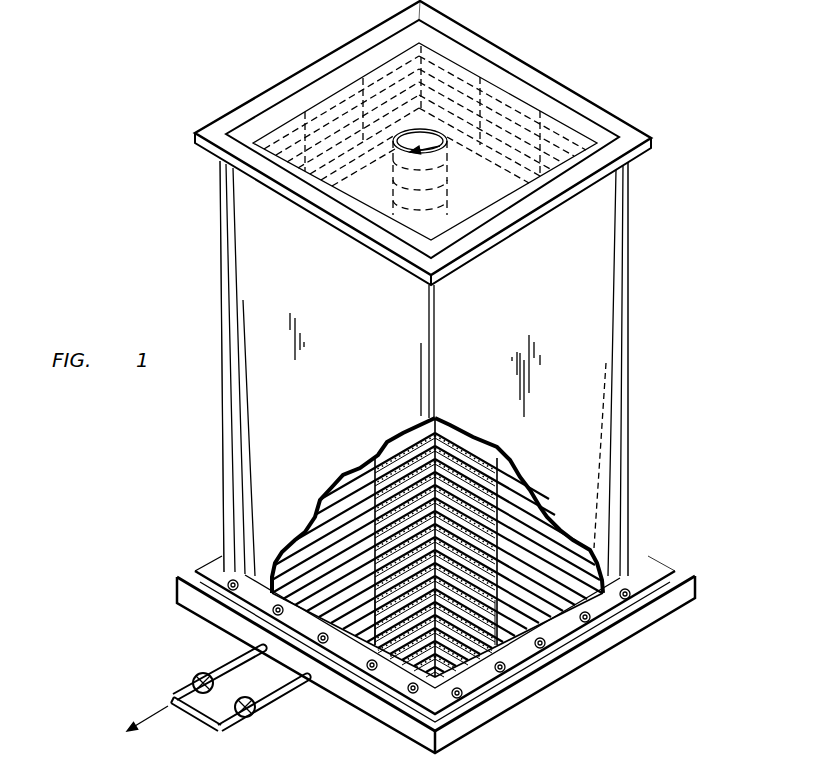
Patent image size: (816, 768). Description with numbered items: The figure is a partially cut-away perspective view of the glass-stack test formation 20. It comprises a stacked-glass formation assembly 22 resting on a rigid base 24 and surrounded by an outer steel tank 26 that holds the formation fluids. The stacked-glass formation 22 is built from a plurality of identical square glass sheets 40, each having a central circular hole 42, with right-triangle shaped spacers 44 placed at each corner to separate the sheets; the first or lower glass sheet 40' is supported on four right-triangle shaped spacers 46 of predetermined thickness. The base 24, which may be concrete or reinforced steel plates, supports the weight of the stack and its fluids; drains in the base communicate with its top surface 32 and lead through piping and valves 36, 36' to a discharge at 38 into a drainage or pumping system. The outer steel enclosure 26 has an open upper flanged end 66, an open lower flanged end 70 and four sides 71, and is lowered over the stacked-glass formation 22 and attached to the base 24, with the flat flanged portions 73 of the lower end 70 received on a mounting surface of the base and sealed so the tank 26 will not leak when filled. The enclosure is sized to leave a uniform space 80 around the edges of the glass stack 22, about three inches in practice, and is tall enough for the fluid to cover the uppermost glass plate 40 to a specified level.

The glass-stack test formation 20 is at (560, 71).
The stacked-glass formation assembly 22 is at (548, 142).
The rigid base 24 is at (672, 603).
The outer steel tank 26 is at (630, 362).
The top surface of the base 32 is at (190, 604).
The valve 36 is at (206, 687).
The valve 36' is at (264, 711).
The discharge 38 is at (160, 718).
The square glass sheet 40 is at (437, 343).
The lower glass sheet 40' is at (505, 638).
The central circular hole 42 is at (394, 149).
The right-triangle shaped spacer 44 is at (398, 640).
The right-triangle shaped spacer 46 is at (467, 653).
The open upper flanged end 66 is at (211, 134).
The open lower flanged end 70 is at (648, 578).
The side 71 is at (237, 298).
The flat flanged portion 73 is at (196, 560).
The uniform space 80 is at (413, 40).